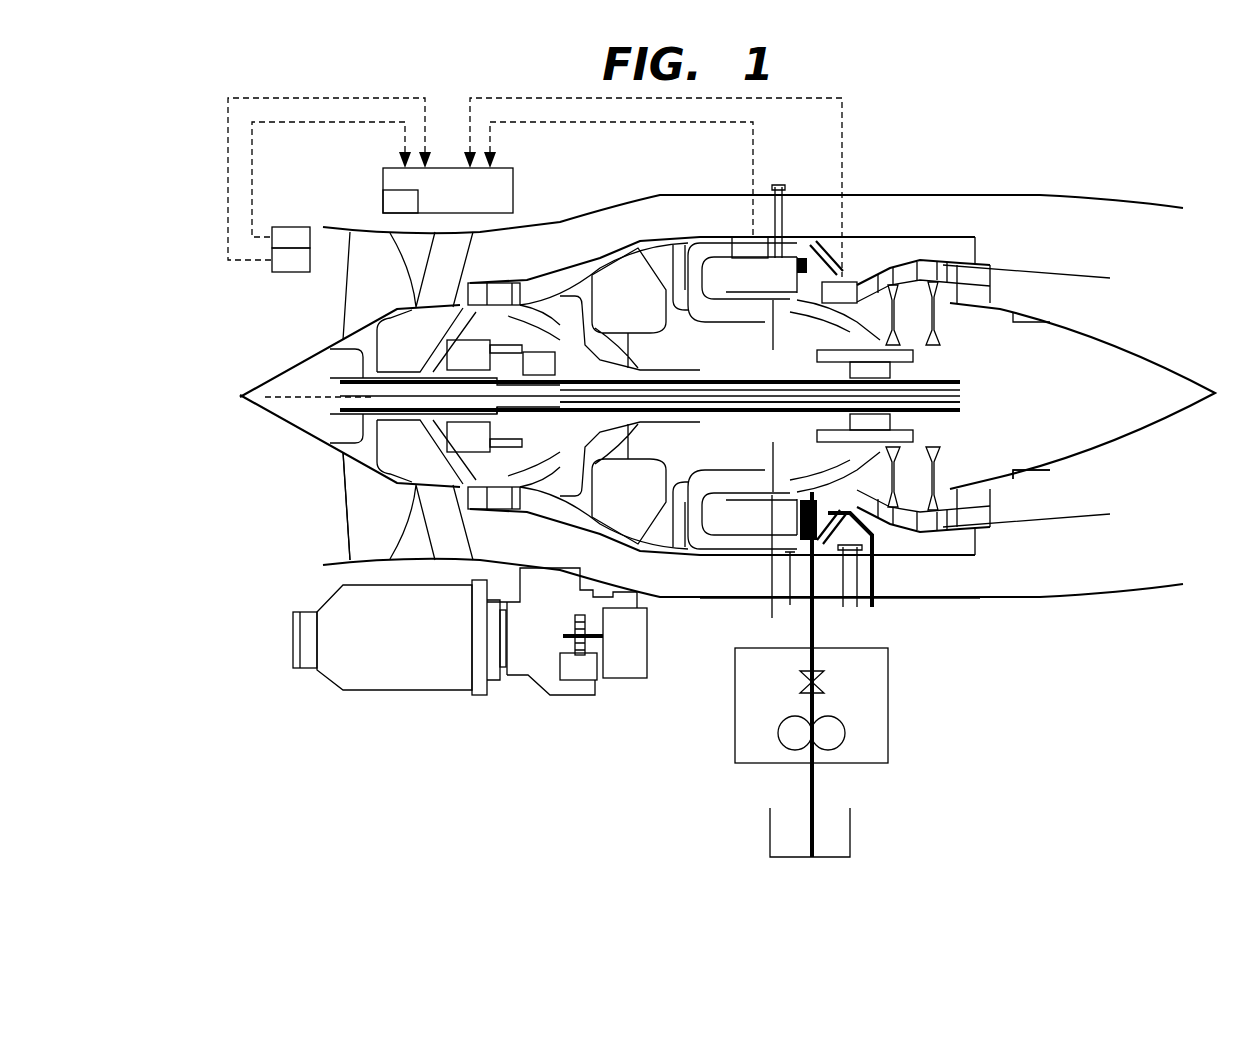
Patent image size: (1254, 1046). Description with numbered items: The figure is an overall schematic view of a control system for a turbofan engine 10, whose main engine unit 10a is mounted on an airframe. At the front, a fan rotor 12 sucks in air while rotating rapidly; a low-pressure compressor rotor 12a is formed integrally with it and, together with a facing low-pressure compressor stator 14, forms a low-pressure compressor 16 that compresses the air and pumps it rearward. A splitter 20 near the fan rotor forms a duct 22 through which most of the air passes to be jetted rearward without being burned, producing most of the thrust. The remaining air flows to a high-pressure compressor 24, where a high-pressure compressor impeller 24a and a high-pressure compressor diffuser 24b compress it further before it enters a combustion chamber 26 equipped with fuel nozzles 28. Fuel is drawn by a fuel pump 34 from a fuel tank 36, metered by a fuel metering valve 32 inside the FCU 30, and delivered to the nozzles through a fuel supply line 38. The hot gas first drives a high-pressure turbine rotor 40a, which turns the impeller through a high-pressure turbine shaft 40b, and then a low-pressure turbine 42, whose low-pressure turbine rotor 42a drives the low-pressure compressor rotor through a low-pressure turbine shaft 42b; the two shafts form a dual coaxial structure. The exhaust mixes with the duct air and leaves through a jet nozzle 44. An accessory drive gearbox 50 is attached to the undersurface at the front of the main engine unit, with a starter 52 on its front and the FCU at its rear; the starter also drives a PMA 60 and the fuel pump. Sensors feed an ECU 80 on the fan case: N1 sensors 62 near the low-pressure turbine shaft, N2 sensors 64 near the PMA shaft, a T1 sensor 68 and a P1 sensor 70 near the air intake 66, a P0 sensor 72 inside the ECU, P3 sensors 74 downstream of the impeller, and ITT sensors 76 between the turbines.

The turbofan engine 10 is at (901, 134).
The main engine unit 10a is at (604, 200).
The fan rotor 12 is at (364, 506).
The low-pressure compressor rotor 12a is at (484, 515).
The low-pressure compressor stator 14 is at (516, 512).
The low-pressure compressor 16 is at (498, 297).
The splitter 20 is at (556, 294).
The duct 22 is at (722, 382).
The high-pressure compressor 24 is at (629, 308).
The high-pressure compressor impeller 24a is at (656, 452).
The high-pressure compressor diffuser 24b is at (672, 517).
The combustion chamber 26 is at (742, 396).
The fuel nozzles 28 is at (800, 253).
The FCU 30 is at (734, 684).
The fuel metering valve 32 is at (826, 686).
The fuel pump 34 is at (848, 730).
The fuel tank 36 is at (856, 818).
The fuel supply line 38 is at (835, 584).
The high-pressure turbine rotor 40a is at (793, 479).
The high-pressure turbine shaft 40b is at (722, 426).
The low-pressure turbine 42 is at (908, 258).
The low-pressure turbine rotor 42a is at (908, 503).
The low-pressure turbine shaft 42b is at (636, 401).
The jet nozzle 44 is at (1079, 395).
The accessory drive gearbox 50 is at (562, 631).
The starter 52 is at (399, 637).
The PMA 60 is at (605, 643).
The N1 sensors 62 is at (539, 363).
The N2 sensors 64 is at (578, 666).
The air intake 66 is at (317, 312).
The T1 sensor 68 is at (291, 237).
The P1 sensor 70 is at (291, 260).
The P0 sensor 72 is at (400, 201).
The P3 sensors 74 is at (750, 247).
The ITT sensors 76 is at (839, 292).
The ECU 80 is at (381, 176).